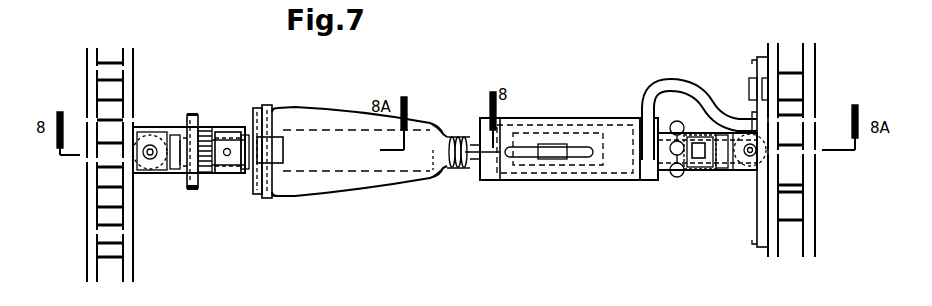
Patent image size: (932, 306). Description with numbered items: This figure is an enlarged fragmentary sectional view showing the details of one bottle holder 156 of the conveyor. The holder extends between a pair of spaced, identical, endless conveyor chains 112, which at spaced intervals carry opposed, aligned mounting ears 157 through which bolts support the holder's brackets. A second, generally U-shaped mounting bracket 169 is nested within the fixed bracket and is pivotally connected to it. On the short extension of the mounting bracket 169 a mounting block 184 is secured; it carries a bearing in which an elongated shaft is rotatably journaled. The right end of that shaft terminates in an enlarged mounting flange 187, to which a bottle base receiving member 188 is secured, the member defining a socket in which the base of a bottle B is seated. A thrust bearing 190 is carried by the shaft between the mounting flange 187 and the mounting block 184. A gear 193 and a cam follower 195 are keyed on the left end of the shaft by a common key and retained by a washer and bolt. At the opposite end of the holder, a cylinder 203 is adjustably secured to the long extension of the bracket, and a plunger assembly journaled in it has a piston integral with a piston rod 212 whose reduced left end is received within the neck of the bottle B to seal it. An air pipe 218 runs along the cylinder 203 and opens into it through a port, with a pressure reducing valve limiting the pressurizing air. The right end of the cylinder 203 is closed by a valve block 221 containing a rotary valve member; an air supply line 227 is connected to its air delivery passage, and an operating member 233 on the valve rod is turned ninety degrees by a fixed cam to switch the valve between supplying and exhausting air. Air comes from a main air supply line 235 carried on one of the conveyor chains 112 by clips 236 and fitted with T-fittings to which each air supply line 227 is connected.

The conveyor chains 112 is at (133, 235).
The bottle holder 156 is at (518, 118).
The mounting ears 157 is at (158, 128).
The second mounting bracket 169 is at (440, 173).
The mounting block 184 is at (228, 168).
The mounting flange 187 is at (258, 196).
The bottle base receiving member 188 is at (276, 196).
The thrust bearing 190 is at (250, 130).
The gear 193 is at (206, 126).
The cam follower 195 is at (192, 188).
The cylinder 203 is at (578, 181).
The piston rod 212 is at (459, 135).
The air pipe 218 is at (580, 146).
The valve block 221 is at (646, 181).
The air supply line 227 is at (682, 86).
The operating member 233 is at (677, 178).
The main air supply line 235 is at (760, 215).
The clips 236 is at (750, 88).
The bottle B is at (330, 112).